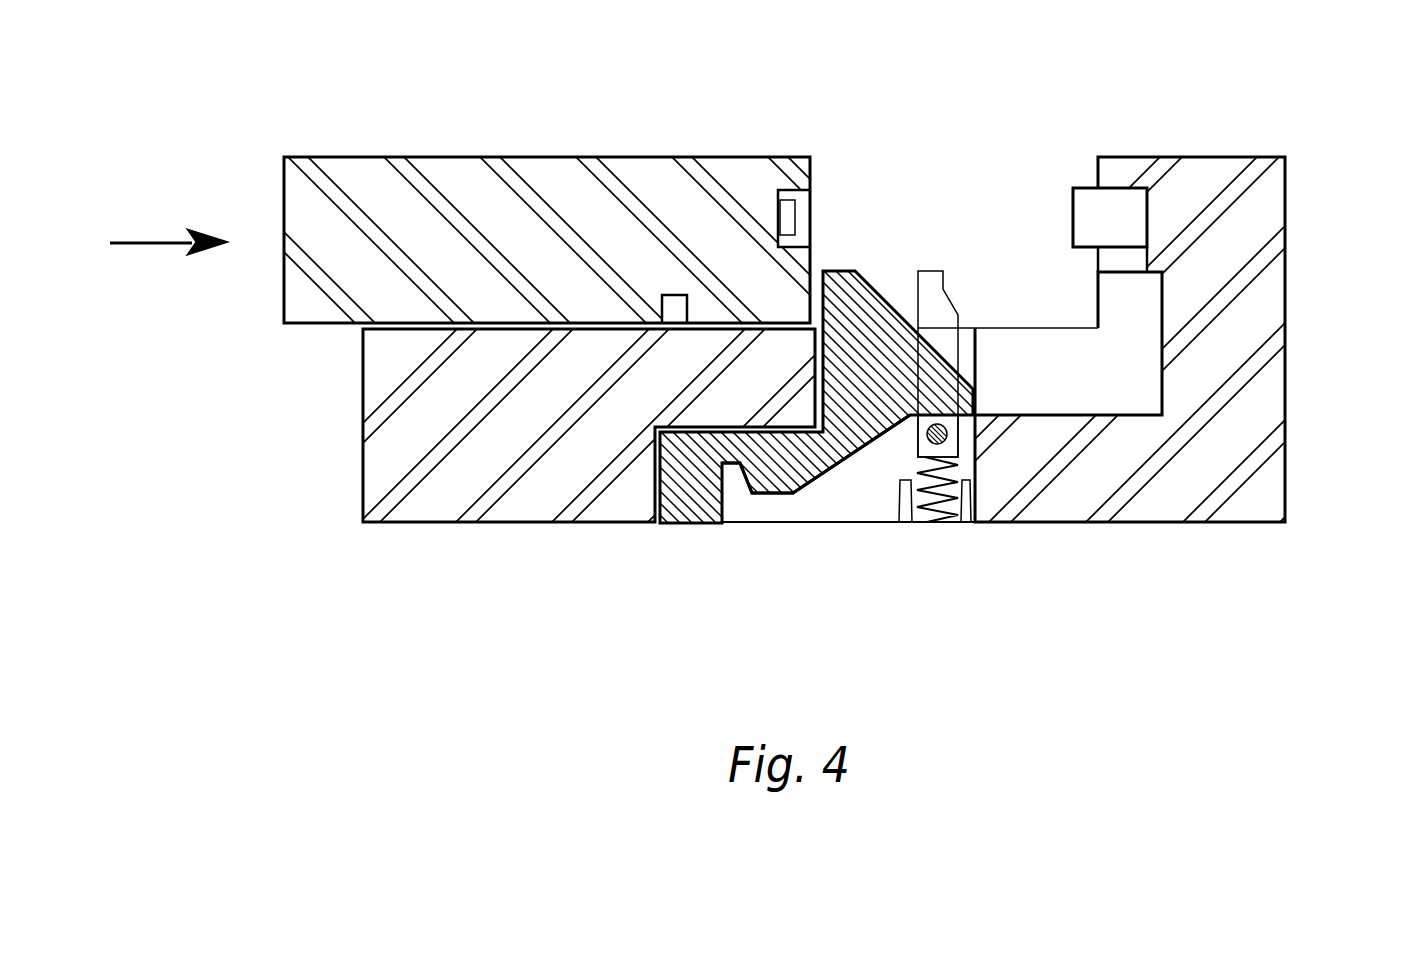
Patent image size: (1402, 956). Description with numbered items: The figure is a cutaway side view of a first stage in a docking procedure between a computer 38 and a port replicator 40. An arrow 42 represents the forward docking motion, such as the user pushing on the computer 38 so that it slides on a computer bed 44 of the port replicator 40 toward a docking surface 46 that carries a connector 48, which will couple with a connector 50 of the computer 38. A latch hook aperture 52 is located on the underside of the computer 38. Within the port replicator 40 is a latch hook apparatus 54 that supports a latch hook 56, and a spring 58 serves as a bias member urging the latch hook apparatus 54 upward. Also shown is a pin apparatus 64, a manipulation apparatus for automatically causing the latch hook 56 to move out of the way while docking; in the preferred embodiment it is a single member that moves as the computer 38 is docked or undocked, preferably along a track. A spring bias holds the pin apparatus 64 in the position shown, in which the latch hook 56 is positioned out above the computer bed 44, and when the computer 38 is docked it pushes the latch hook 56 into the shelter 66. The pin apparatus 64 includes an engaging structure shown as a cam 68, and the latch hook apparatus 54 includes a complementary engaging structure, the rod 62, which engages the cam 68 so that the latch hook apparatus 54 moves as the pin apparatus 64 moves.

The computer 38 is at (440, 157).
The port replicator 40 is at (1215, 157).
The arrow 42 is at (148, 242).
The computer bed 44 is at (1015, 328).
The docking surface 46 is at (1093, 172).
The connector 48 is at (1073, 208).
The connector 50 is at (813, 207).
The latch hook aperture 52 is at (672, 312).
The latch hook apparatus 54 is at (958, 425).
The latch hook 56 is at (930, 271).
The spring 58 is at (937, 522).
The rod 62 is at (947, 435).
The pin apparatus 64 is at (682, 525).
The shelter 66 is at (1132, 345).
The cam 68 is at (786, 495).